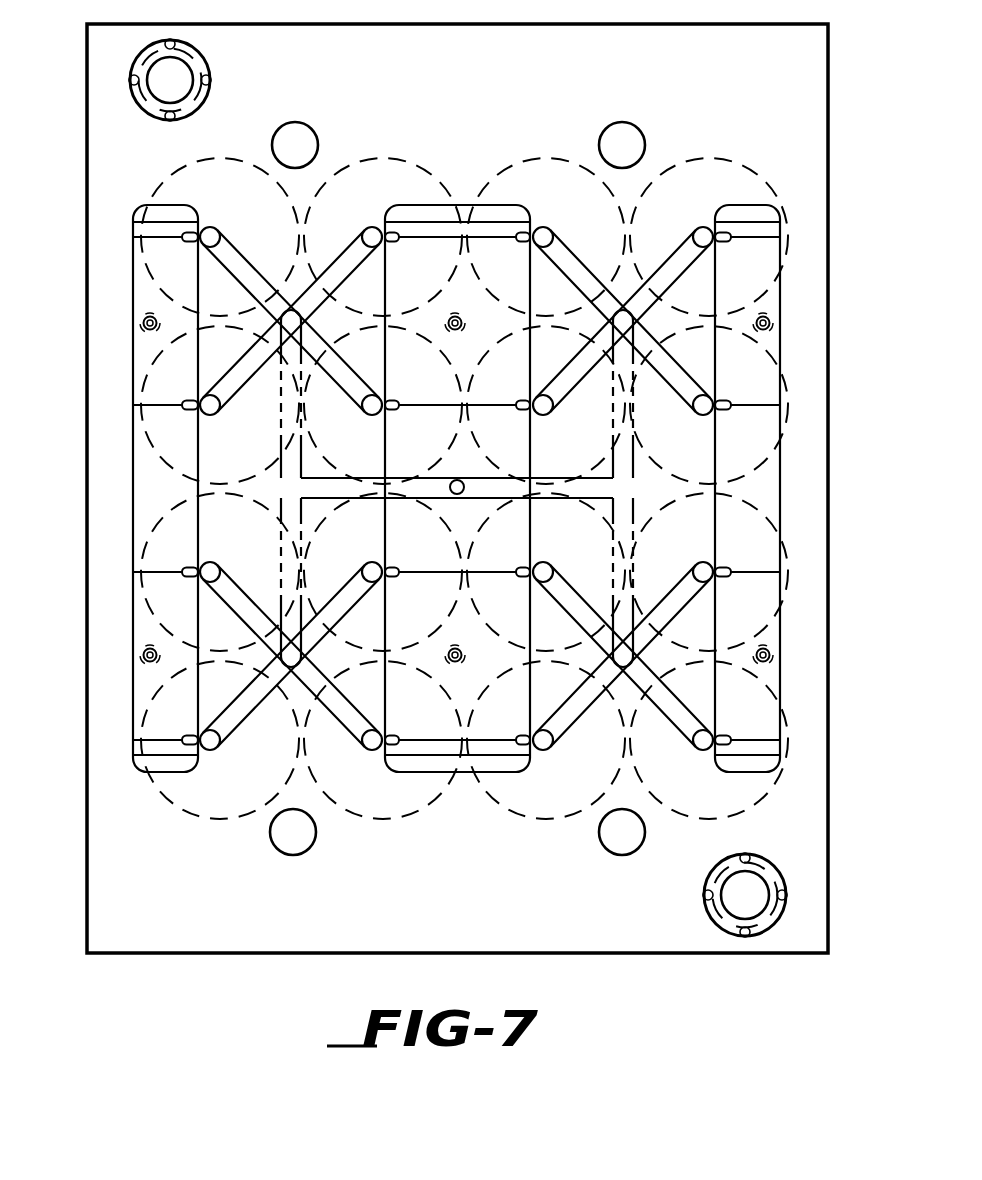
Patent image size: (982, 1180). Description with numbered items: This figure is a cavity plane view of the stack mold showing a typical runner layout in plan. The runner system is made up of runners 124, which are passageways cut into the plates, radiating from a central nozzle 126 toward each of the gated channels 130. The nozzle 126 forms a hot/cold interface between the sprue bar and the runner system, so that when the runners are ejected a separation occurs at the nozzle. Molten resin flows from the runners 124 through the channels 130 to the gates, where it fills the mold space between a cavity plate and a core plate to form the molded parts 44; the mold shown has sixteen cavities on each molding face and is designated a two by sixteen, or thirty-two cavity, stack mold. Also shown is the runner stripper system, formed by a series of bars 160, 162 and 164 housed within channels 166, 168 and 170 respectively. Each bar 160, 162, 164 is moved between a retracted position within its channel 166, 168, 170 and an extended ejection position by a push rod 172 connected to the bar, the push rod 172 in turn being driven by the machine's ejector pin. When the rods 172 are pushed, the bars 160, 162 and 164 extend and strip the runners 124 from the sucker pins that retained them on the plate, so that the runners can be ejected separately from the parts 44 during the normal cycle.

The molded parts 44 is at (114, 488).
The runners 124 is at (678, 250).
The nozzle 126 is at (462, 494).
The channels 130 is at (728, 402).
The bar 160 is at (803, 481).
The bar 162 is at (441, 436).
The bar 164 is at (137, 287).
The channel 166 is at (780, 287).
The channel 168 is at (392, 208).
The channel 170 is at (133, 348).
The push rod 172 is at (707, 225).